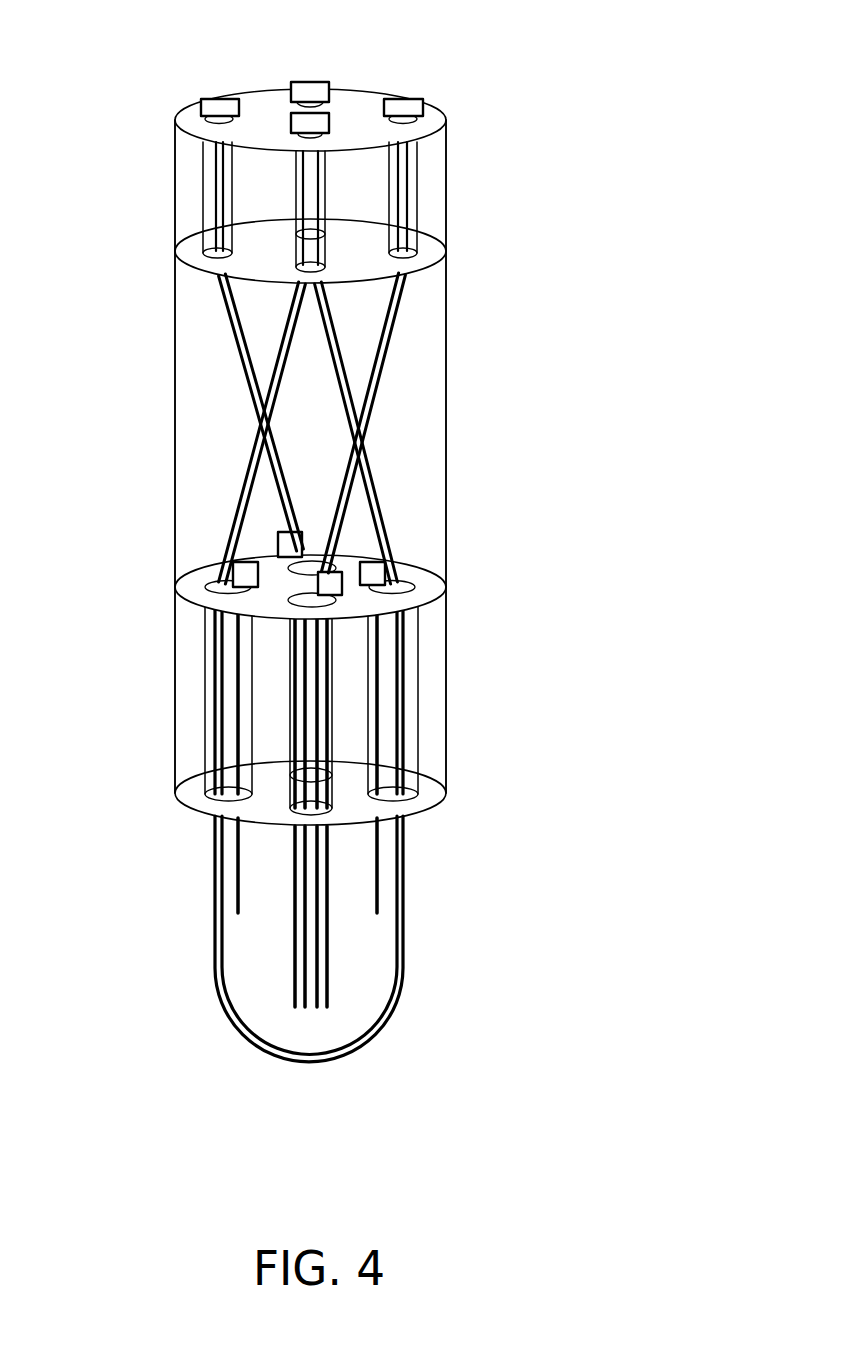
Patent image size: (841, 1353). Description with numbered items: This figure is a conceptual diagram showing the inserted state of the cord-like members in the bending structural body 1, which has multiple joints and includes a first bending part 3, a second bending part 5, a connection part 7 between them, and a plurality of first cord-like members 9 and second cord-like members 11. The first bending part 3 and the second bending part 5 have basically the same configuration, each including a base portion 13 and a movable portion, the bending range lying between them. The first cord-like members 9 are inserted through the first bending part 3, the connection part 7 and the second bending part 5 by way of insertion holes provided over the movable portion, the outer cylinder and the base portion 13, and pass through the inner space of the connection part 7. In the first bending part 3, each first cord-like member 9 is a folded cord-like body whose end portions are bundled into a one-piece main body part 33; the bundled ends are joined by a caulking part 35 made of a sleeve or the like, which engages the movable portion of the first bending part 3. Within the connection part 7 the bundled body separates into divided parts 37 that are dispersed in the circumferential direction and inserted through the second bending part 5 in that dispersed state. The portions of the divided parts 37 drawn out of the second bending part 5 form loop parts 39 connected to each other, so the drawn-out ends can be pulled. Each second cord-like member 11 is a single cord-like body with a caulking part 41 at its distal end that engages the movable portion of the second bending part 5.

The bending structural body 1 is at (614, 137).
The first bending part 3 is at (453, 170).
The second bending part 5 is at (454, 708).
The connection part 7 is at (454, 396).
The first cord-like member 9 is at (298, 428).
The second cord-like member 11 is at (238, 878).
The base portion 13 is at (176, 259).
The main body part 33 is at (215, 172).
The caulking part 35 is at (203, 107).
The divided part 37 is at (263, 392).
The loop part 39 is at (222, 1019).
The caulking part 41 is at (238, 573).